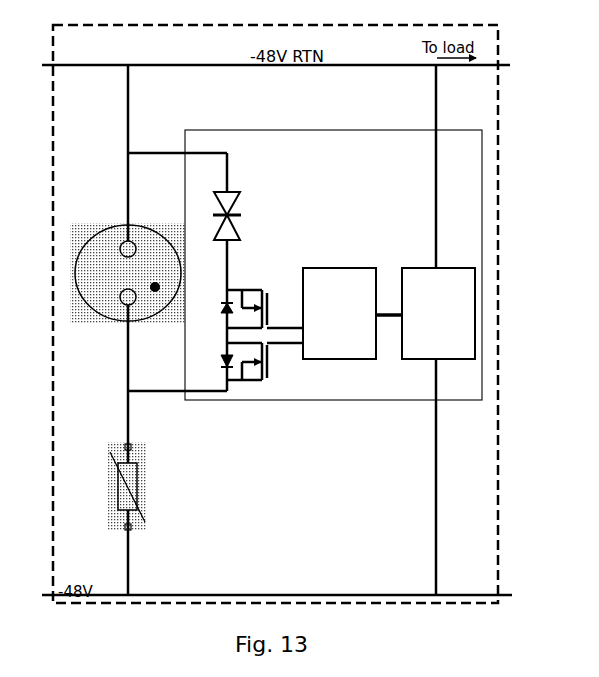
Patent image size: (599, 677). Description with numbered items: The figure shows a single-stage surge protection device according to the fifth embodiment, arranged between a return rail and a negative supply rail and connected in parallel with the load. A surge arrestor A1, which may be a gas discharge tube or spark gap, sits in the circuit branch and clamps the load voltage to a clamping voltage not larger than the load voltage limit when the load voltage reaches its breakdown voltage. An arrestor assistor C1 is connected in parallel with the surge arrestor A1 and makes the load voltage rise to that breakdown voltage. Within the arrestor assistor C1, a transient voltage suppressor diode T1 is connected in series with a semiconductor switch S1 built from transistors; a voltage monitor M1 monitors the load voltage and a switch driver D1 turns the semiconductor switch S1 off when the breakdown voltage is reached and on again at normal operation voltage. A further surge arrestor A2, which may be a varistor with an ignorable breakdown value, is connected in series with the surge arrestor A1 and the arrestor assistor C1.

The surge arrestor A1 is at (127, 262).
The surge arrestor A2 is at (112, 486).
The arrestor assistor C1 is at (333, 252).
The transient voltage suppressor diode T1 is at (241, 221).
The semiconductor switch S1 is at (249, 336).
The switch driver D1 is at (352, 313).
The voltage monitor M1 is at (438, 313).